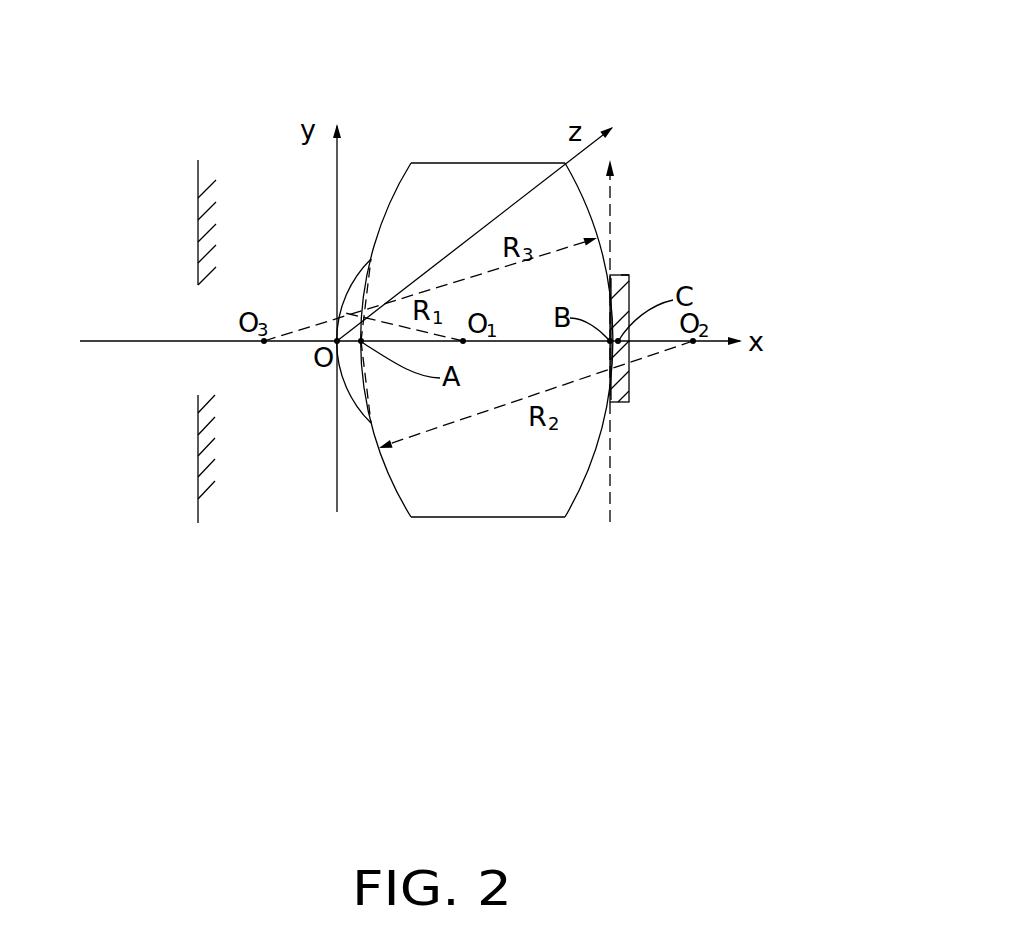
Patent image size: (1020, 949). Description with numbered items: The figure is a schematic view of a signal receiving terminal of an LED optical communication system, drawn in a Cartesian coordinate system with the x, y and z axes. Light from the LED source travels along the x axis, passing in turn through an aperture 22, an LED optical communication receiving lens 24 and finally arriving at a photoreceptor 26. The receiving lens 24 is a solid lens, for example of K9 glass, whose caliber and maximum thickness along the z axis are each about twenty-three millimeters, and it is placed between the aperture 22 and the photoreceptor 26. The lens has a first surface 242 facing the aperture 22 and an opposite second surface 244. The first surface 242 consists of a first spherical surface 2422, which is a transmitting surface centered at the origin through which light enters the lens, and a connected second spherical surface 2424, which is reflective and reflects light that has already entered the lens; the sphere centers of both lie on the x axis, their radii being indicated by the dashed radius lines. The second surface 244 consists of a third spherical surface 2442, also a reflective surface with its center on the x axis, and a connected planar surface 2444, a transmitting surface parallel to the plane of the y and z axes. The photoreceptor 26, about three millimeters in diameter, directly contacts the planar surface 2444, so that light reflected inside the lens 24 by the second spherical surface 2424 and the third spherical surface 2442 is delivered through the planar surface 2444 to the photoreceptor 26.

The aperture 22 is at (210, 197).
The LED optical communication receiving lens 24 is at (554, 259).
The first surface 242 is at (410, 259).
The first spherical surface 2422 is at (348, 292).
The second spherical surface 2424 is at (389, 212).
The second surface 244 is at (654, 321).
The third spherical surface 2442 is at (578, 180).
The planar surface 2444 is at (612, 322).
The photoreceptor 26 is at (622, 284).